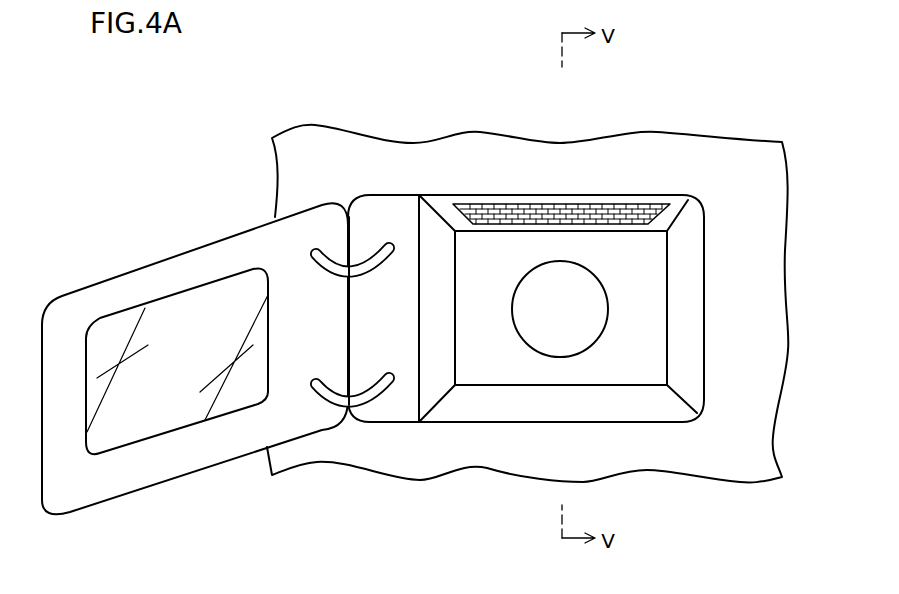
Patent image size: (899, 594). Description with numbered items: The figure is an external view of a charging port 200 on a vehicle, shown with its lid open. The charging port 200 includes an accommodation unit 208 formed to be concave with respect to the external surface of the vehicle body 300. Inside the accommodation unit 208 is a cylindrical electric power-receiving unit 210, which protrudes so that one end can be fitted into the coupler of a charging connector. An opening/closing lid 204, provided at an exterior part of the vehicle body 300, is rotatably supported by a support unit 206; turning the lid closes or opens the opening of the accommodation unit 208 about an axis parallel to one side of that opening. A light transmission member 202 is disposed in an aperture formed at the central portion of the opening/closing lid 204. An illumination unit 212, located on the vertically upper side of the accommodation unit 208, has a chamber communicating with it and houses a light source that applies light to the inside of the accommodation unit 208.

The charging port 200 is at (594, 165).
The light transmission member 202 is at (173, 402).
The opening/closing lid 204 is at (135, 290).
The support unit 206 is at (367, 263).
The accommodation unit 208 is at (680, 263).
The electric power-receiving unit 210 is at (583, 293).
The illumination unit 212 is at (493, 205).
The vehicle body 300 is at (748, 350).